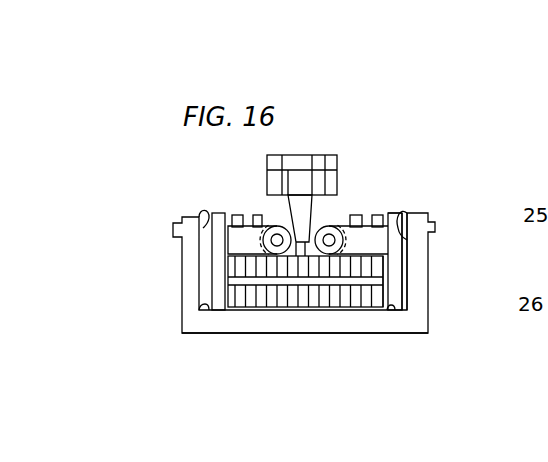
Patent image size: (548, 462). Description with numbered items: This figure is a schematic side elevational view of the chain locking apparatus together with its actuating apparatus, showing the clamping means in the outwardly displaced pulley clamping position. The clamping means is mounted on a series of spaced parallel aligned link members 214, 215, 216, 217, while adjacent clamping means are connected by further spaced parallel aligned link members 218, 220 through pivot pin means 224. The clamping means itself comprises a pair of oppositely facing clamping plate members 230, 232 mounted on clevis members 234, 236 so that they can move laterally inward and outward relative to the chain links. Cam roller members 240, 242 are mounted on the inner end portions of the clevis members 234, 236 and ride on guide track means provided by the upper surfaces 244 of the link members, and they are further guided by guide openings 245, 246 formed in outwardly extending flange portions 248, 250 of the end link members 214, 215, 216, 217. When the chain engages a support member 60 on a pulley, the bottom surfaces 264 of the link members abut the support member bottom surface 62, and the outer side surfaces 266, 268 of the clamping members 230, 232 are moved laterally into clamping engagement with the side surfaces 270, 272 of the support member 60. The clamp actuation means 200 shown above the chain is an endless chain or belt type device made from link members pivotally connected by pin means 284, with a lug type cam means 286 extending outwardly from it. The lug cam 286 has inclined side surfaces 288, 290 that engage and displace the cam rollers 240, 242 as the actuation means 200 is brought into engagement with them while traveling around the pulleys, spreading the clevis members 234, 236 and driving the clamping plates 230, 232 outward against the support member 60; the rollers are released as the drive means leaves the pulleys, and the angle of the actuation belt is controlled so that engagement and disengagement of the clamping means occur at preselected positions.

The support member 60 is at (433, 347).
The support member bottom surface 62 is at (197, 311).
The clamp actuation means 200 is at (338, 142).
The link member 214 is at (198, 333).
The link member 215 is at (257, 306).
The link member 216 is at (358, 299).
The link member 217 is at (378, 300).
The link member 218 is at (245, 307).
The link member 220 is at (368, 300).
The pivot pin means 224 is at (297, 288).
The clamping plate member 230 is at (217, 275).
The clamping plate member 232 is at (395, 284).
The clevis member 234 is at (230, 244).
The clevis member 236 is at (377, 239).
The cam roller member 240 is at (268, 224).
The cam roller member 242 is at (370, 226).
The upper surfaces of link members 244 is at (307, 302).
The guide opening 245 is at (242, 226).
The guide opening 246 is at (397, 213).
The flange portion 248 is at (226, 214).
The flange portion 250 is at (404, 230).
The bottom surfaces of link members 264 is at (276, 307).
The outer side surface 266 is at (228, 291).
The outer side surface 268 is at (405, 298).
The side surface of support member 270 is at (183, 211).
The side surface of support member 272 is at (404, 244).
The pin means 284 is at (336, 171).
The lug type cam means 286 is at (304, 202).
The inclined side surface 288 is at (283, 219).
The inclined side surface 290 is at (345, 203).